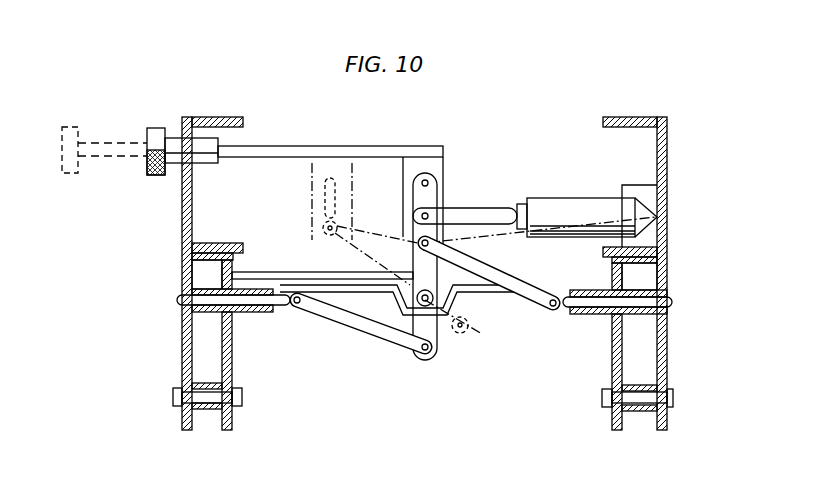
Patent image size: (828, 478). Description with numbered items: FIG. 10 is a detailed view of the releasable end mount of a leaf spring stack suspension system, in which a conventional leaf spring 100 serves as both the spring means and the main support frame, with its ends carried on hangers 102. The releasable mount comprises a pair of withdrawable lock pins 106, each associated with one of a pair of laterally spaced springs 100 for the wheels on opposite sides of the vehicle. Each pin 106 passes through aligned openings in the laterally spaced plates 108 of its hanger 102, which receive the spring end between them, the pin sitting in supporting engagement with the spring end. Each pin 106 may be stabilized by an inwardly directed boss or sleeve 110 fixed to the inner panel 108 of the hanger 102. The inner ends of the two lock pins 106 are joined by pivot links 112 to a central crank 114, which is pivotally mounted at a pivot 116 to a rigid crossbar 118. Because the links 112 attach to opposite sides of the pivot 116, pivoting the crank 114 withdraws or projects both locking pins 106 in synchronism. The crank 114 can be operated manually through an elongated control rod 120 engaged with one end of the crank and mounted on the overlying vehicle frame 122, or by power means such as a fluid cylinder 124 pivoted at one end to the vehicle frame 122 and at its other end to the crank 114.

The leaf spring 100 is at (190, 272).
The hanger 102 is at (236, 370).
The lock pin 106 is at (205, 305).
The hanger plate 108 is at (220, 355).
The boss or sleeve 110 is at (248, 316).
The pivot link 112 is at (490, 275).
The central crank 114 is at (440, 335).
The pivot 116 is at (452, 300).
The crossbar 118 is at (272, 272).
The control rod 120 is at (358, 147).
The vehicle frame 122 is at (183, 213).
The fluid cylinder 124 is at (582, 206).